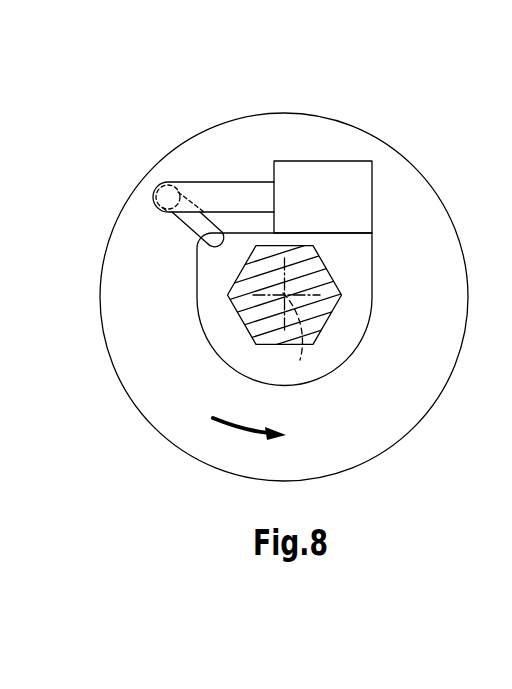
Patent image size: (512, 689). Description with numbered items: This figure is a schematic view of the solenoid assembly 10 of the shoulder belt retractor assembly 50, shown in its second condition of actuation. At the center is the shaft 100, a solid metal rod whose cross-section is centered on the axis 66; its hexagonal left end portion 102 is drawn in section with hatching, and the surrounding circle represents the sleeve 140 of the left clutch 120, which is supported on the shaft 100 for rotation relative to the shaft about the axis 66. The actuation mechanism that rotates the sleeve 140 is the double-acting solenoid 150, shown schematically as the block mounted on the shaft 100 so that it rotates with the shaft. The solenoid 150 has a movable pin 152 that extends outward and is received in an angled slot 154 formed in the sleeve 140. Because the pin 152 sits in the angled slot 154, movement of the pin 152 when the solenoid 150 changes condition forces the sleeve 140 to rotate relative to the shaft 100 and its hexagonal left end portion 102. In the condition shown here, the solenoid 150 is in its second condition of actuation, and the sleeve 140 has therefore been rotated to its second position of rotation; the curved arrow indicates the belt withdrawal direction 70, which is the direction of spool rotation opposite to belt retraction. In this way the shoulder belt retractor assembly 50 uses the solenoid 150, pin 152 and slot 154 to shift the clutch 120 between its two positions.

The wrench assembly 10 is at (125, 96).
The shoulder belt retractor assembly 50 is at (126, 156).
The axis 66 is at (306, 373).
The belt withdrawal direction 70 is at (238, 432).
The shaft 100 is at (251, 345).
The hexagonal left end portion 102 is at (247, 325).
The left clutch 120 is at (192, 101).
The sleeve 140 is at (315, 113).
The solenoid 150 is at (346, 158).
The movable pin 152 is at (215, 182).
The angled slot 154 is at (180, 227).